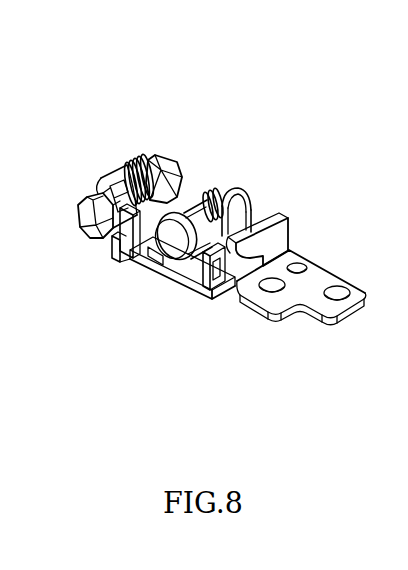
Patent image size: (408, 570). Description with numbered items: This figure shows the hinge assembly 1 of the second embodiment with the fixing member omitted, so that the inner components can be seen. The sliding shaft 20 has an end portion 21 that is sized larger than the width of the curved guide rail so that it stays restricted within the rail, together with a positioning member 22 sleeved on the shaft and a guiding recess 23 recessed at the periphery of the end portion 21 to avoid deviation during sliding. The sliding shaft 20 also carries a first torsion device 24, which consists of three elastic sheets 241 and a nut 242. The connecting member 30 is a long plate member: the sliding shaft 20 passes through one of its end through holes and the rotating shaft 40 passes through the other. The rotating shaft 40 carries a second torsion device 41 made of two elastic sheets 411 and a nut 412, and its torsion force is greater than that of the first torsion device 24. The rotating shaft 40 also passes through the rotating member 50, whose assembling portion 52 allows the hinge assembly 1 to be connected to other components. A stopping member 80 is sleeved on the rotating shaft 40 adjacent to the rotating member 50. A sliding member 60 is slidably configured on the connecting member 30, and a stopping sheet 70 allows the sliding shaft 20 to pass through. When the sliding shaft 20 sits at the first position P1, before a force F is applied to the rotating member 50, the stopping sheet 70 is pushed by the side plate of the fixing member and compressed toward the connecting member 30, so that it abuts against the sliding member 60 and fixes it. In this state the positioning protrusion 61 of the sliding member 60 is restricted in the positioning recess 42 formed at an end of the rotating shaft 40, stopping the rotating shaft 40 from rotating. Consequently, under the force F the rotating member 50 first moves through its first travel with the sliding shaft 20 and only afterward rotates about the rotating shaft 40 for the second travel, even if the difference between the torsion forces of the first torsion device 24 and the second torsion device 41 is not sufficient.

The hinge assembly 1 is at (58, 100).
The sliding shaft 20 is at (184, 186).
The end portion 21 is at (66, 208).
The positioning member 22 is at (116, 175).
The guiding recess 23 is at (92, 235).
The first torsion device 24 is at (180, 103).
The elastic sheets 241 is at (126, 173).
The nut 242 is at (162, 157).
The connecting member 30 is at (200, 178).
The rotating shaft 40 is at (180, 270).
The second torsion device 41 is at (288, 170).
The elastic sheets 411 is at (234, 217).
The nut 412 is at (250, 212).
The positioning recess 42 is at (160, 257).
The rotating member 50 is at (287, 237).
The assembling portion 52 is at (355, 277).
The sliding member 60 is at (200, 303).
The positioning protrusion 61 is at (136, 251).
The stopping sheet 70 is at (120, 249).
The stopping member 80 is at (211, 312).
The force F is at (322, 285).
The first position P1 is at (85, 233).